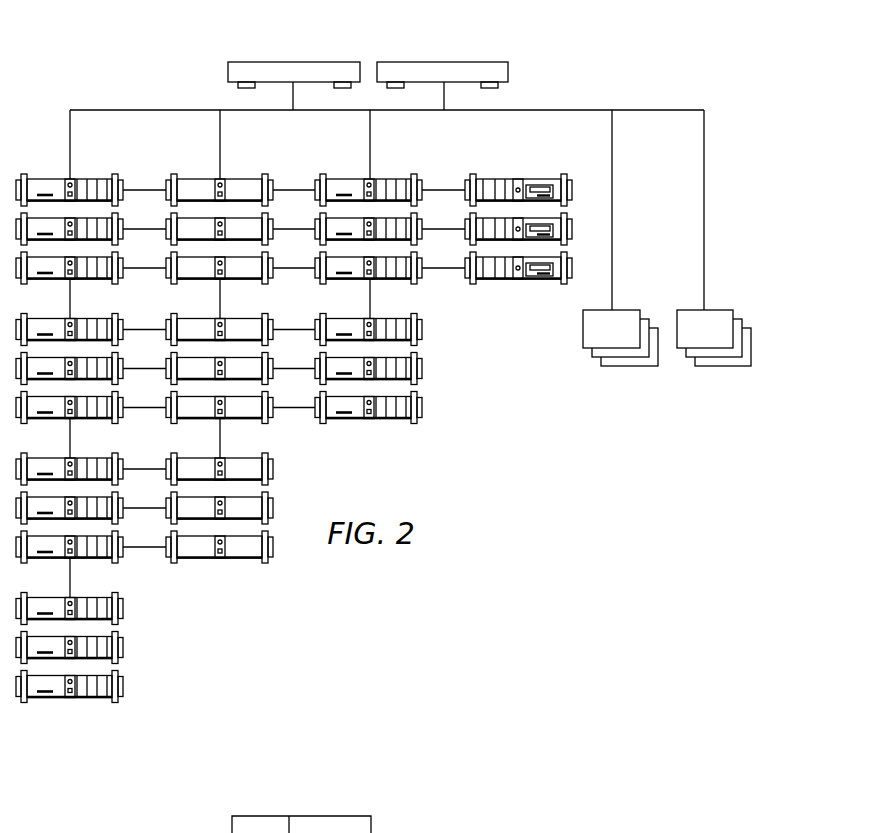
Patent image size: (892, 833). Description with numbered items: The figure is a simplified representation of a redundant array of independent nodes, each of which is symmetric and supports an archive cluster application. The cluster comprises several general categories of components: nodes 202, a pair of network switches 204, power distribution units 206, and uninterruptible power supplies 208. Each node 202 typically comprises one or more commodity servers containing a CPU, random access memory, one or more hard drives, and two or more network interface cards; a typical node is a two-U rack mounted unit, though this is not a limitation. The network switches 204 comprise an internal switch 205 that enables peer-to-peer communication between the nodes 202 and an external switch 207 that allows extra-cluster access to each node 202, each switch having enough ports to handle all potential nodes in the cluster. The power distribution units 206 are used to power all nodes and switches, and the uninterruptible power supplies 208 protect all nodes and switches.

The node 202 is at (55, 172).
The network switches 204 is at (387, 165).
The internal switch 205 is at (283, 61).
The power distribution unit 206 is at (627, 308).
The external switch 207 is at (471, 61).
The uninterruptible power supply 208 is at (718, 308).